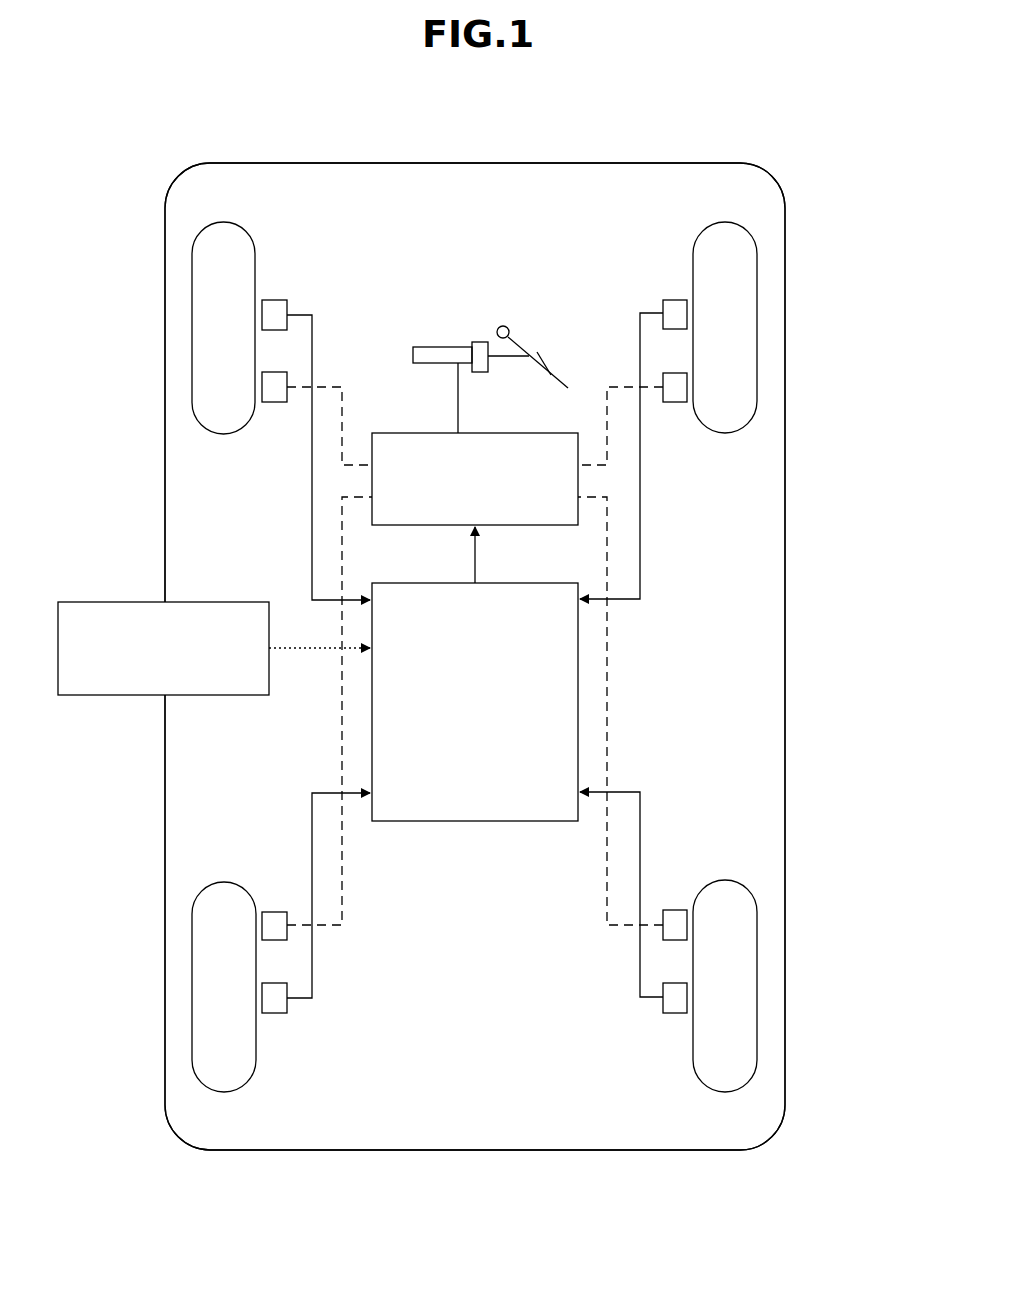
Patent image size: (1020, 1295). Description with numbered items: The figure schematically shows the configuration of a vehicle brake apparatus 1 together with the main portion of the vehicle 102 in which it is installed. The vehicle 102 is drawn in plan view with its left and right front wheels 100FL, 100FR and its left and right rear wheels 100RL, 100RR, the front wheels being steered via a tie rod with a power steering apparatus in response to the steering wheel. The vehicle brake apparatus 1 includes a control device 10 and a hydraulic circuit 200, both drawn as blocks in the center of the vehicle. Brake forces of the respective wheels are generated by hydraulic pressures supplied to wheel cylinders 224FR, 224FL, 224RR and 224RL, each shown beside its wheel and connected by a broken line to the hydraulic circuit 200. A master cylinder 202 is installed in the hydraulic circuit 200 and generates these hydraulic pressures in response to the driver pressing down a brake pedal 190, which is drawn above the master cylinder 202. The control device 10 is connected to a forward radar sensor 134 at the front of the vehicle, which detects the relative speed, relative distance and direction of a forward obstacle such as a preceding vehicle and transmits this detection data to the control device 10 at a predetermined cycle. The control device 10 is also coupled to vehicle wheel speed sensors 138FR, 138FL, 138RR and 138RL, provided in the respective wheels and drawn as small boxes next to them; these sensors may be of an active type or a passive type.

The vehicle brake apparatus 1 is at (344, 137).
The vehicle 102 is at (785, 515).
The left front wheel 100FL is at (192, 321).
The right front wheel 100FR is at (757, 320).
The left rear wheel 100RL is at (192, 990).
The right rear wheel 100RR is at (757, 990).
The vehicle wheel speed sensor 138FL is at (275, 300).
The vehicle wheel speed sensor 138FR is at (674, 300).
The vehicle wheel speed sensor 138RL is at (277, 1013).
The vehicle wheel speed sensor 138RR is at (673, 1013).
The wheel cylinder 224FL is at (275, 402).
The wheel cylinder 224FR is at (673, 402).
The wheel cylinder 224RL is at (275, 912).
The wheel cylinder 224RR is at (675, 910).
The hydraulic circuit 200 is at (494, 433).
The master cylinder 202 is at (440, 364).
The brake pedal 190 is at (543, 366).
The control device 10 is at (478, 821).
The forward radar sensor 134 is at (190, 602).